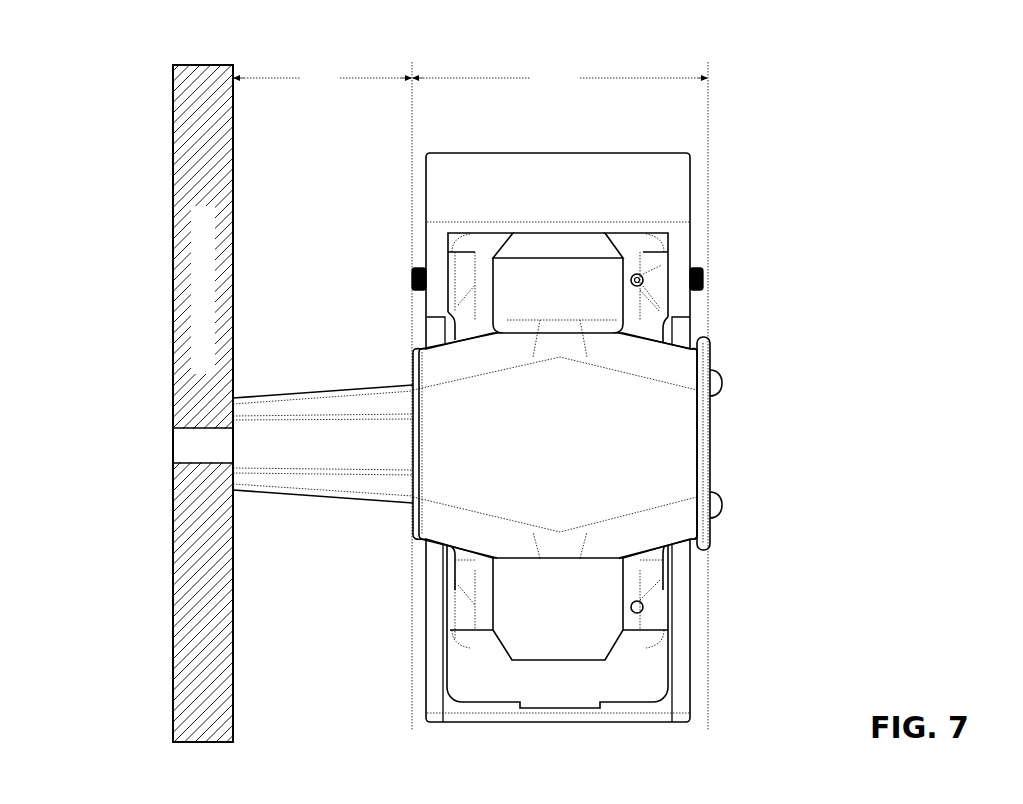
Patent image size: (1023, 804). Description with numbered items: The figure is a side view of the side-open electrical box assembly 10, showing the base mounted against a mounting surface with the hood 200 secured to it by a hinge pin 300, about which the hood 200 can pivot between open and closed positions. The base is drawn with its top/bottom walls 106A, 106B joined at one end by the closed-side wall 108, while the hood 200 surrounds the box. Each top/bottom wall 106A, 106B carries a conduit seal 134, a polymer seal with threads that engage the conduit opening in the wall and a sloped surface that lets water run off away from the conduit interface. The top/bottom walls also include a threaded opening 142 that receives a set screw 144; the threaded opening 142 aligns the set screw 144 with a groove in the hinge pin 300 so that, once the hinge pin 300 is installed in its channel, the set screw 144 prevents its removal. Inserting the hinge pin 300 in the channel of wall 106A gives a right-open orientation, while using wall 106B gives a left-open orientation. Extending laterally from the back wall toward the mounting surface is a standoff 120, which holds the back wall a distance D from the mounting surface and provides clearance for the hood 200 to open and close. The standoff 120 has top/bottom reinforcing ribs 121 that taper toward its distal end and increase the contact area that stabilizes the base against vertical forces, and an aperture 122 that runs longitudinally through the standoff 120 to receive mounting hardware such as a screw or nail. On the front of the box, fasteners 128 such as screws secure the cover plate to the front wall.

The side-open electrical box assembly 10 is at (250, 46).
The hood 200 is at (677, 165).
The conduit seal 134 is at (512, 236).
The set screw 144 is at (654, 278).
The threaded opening 142 is at (668, 278).
The hinge pin 300 is at (703, 285).
The top/bottom wall 106A is at (432, 346).
The top/bottom wall 106B is at (434, 545).
The closed-side wall 108 is at (455, 393).
The top/bottom reinforcing ribs 121 is at (272, 400).
The standoff 120 is at (323, 458).
The aperture 122 is at (223, 445).
The fasteners 128 is at (721, 384).